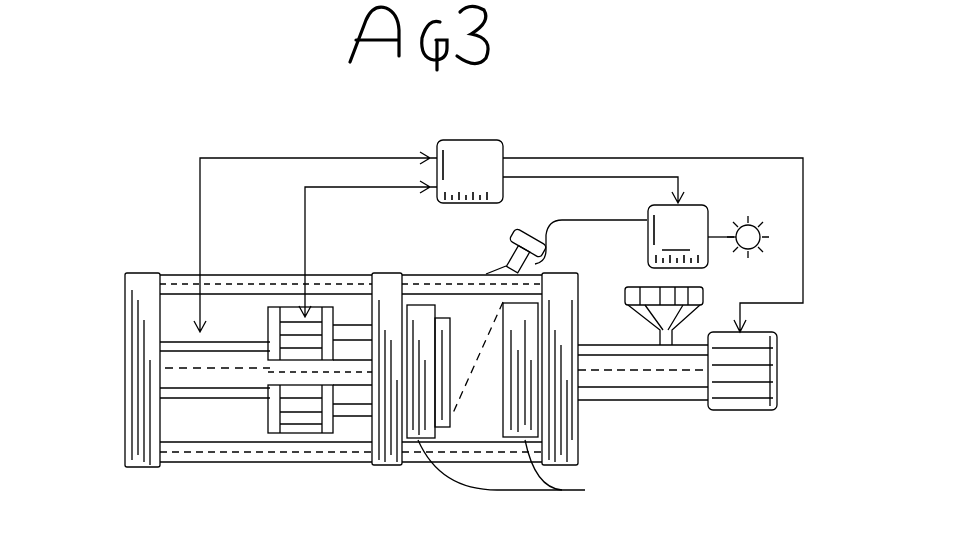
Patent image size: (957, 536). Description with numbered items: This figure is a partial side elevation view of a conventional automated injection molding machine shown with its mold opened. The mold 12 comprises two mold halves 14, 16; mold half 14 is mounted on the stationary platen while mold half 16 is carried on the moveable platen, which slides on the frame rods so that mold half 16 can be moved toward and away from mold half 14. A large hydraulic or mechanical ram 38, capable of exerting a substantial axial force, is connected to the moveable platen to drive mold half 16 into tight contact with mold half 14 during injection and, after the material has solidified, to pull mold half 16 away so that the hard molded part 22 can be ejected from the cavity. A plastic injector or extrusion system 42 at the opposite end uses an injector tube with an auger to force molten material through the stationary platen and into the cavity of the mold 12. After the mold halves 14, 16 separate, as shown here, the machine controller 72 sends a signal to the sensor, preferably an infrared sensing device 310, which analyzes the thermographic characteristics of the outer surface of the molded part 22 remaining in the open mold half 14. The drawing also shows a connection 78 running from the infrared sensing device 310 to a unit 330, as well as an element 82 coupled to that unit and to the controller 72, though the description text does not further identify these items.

The mold 12 is at (520, 475).
The mold half 14 is at (545, 284).
The mold half 16 is at (414, 302).
The hard molded part 22 is at (445, 318).
The ram 38 is at (268, 318).
The plastic injector or extrusion system 42 is at (675, 400).
The machine controller 72 is at (498, 236).
The signal line 78 is at (566, 220).
The indicator lamp 82 is at (757, 254).
The infrared sensing device 310 is at (540, 262).
The evaluation unit 330 is at (678, 236).